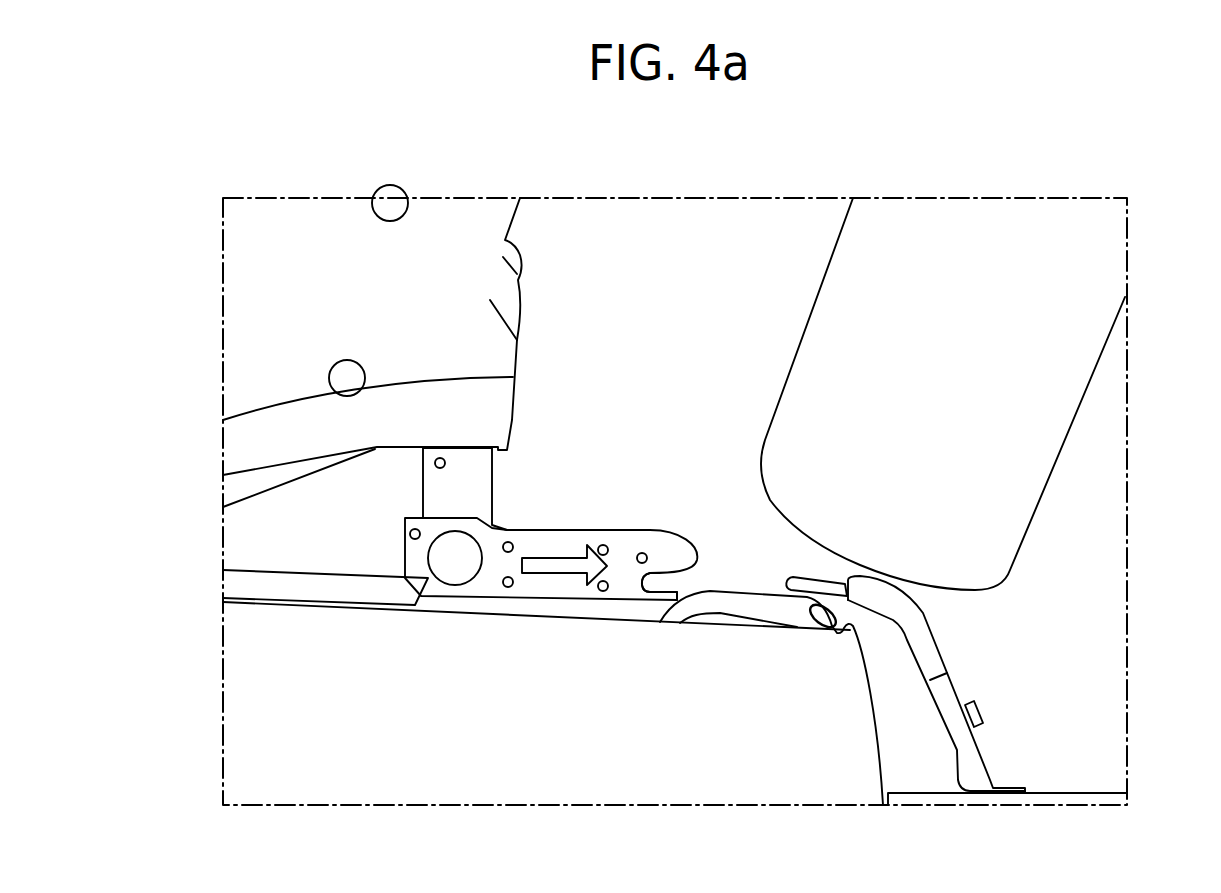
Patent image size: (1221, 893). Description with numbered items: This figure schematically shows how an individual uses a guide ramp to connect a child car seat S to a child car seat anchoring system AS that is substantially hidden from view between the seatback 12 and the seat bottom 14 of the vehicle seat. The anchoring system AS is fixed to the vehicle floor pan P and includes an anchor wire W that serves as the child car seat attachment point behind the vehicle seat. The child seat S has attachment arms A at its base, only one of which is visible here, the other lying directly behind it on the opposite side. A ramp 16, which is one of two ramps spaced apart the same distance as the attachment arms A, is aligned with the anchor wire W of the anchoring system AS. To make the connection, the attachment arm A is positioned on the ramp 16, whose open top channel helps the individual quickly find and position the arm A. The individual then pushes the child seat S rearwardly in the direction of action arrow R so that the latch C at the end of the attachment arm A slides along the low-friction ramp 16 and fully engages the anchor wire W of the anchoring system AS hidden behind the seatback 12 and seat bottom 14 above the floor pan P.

The seatback 12 is at (1010, 397).
The seat bottom 14 is at (503, 725).
The ramp 16 is at (750, 608).
The child car seat S is at (258, 288).
The attachment arm A is at (552, 537).
The action arrow R is at (562, 567).
The latch C is at (662, 598).
The anchor wire W is at (793, 577).
The child car seat anchoring system AS is at (1013, 638).
The vehicle floor pan P is at (1087, 793).